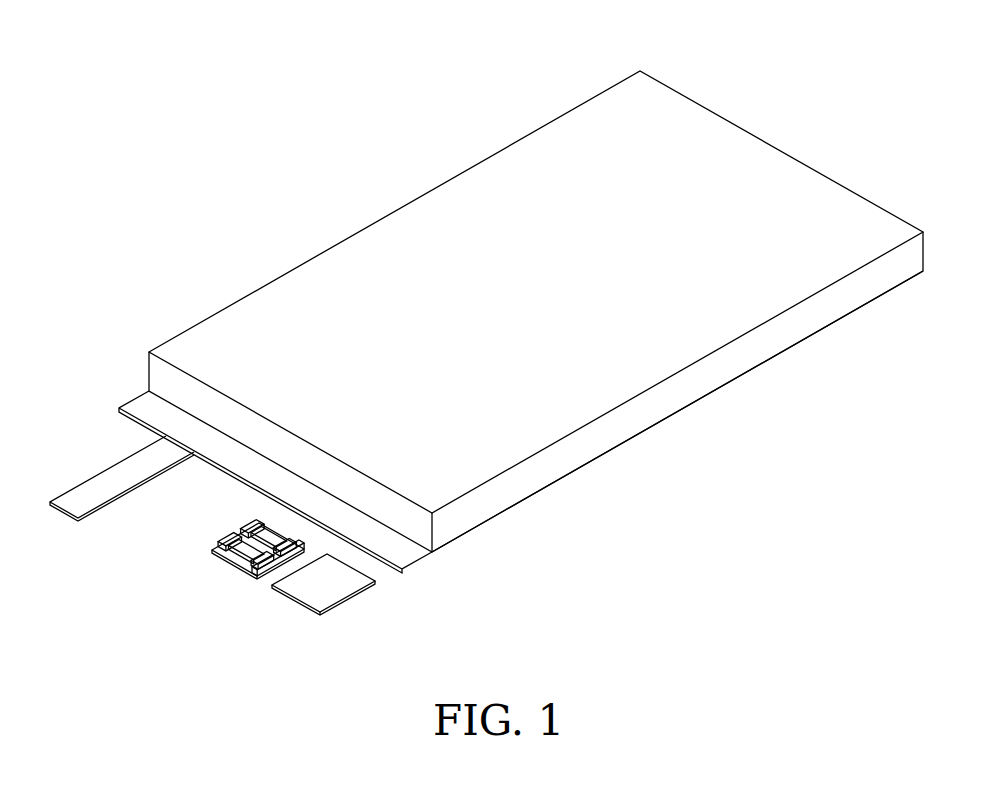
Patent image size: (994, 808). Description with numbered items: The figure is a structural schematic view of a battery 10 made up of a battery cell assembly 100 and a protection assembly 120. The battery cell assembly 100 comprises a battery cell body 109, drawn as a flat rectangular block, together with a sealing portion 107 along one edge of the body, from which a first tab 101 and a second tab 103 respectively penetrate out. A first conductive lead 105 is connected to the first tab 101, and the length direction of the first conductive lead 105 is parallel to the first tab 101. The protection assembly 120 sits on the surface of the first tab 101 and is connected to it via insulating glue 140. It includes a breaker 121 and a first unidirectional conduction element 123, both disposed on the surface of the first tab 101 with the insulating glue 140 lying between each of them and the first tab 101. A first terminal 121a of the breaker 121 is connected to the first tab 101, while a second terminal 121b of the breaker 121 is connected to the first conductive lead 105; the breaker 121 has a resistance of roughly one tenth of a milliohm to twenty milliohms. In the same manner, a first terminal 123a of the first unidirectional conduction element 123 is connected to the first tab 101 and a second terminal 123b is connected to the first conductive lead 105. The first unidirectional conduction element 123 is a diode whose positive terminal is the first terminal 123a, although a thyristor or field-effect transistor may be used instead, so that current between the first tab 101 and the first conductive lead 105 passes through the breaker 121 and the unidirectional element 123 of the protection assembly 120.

The battery 10 is at (422, 22).
The battery cell assembly 100 is at (443, 167).
The first tab 101 is at (214, 550).
The second tab 103 is at (92, 505).
The first conductive lead 105 is at (333, 594).
The sealing portion 107 is at (120, 414).
The battery cell body 109 is at (558, 463).
The protection assembly 120 is at (246, 552).
The breaker 121 is at (257, 545).
The first terminal of the breaker 121a is at (250, 526).
The second terminal of the breaker 121b is at (298, 556).
The first unidirectional conduction element 123 is at (215, 586).
The first terminal of the first unidirectional conduction element 123a is at (222, 550).
The second terminal of the first unidirectional conduction element 123b is at (270, 567).
The insulating glue 140 is at (300, 544).